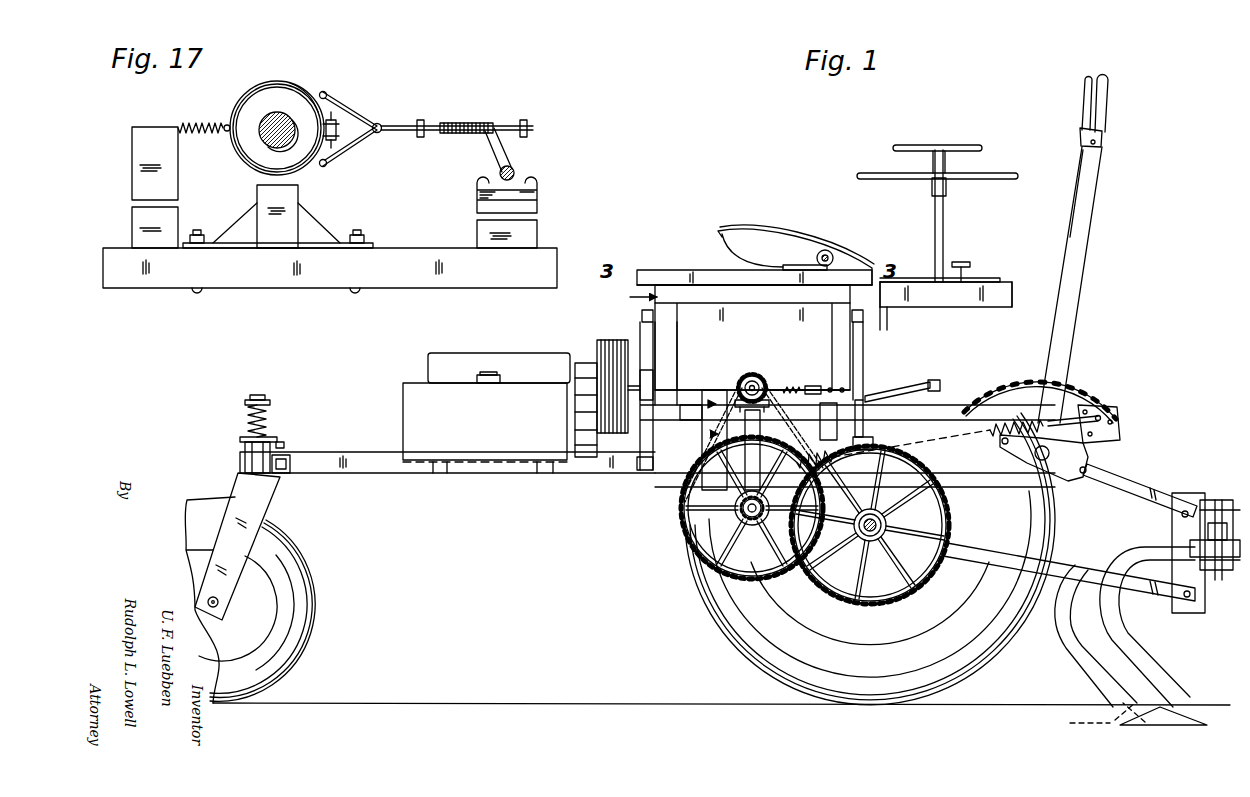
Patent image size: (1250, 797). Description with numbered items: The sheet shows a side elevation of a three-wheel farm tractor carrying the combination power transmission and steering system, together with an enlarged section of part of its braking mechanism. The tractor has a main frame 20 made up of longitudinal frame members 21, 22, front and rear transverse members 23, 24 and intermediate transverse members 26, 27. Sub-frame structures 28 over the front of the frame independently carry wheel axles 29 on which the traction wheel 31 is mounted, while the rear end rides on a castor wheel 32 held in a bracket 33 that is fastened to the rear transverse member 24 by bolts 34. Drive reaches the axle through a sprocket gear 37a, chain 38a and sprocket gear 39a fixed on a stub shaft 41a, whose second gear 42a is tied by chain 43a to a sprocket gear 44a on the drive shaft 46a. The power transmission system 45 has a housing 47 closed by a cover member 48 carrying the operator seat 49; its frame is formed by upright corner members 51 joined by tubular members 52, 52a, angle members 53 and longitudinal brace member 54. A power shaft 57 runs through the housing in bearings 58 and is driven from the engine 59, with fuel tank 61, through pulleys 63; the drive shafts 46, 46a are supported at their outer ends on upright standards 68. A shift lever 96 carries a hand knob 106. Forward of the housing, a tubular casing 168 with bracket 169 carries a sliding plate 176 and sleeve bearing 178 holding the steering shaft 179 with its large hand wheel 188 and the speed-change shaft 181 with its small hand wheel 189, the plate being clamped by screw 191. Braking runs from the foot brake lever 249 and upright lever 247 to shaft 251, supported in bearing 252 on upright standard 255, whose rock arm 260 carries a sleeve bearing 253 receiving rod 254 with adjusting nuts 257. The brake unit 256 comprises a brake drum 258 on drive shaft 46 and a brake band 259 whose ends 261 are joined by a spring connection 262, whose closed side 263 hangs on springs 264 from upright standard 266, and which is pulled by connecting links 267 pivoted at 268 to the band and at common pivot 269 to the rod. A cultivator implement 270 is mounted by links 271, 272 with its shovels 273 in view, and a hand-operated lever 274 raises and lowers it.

In FIG. 1, the main frame 20 is at (366, 448).
In FIG. 17, the longitudinal frame member 21 is at (253, 270).
In FIG. 1, the longitudinal frame member 22 is at (383, 470).
In FIG. 1, the front transverse member 23 is at (1050, 453).
In FIG. 1, the rear transverse member 24 is at (291, 467).
In FIG. 1, the intermediate transverse member 26 is at (687, 412).
In FIG. 1, the intermediate transverse member 27 is at (925, 440).
In FIG. 1, the sub-frame structure 28 is at (885, 545).
In FIG. 1, the wheel axle 29 is at (862, 535).
In FIG. 1, the traction wheel 31 is at (955, 655).
In FIG. 1, the castor wheel 32 is at (316, 617).
In FIG. 1, the bracket 33 is at (250, 458).
In FIG. 1, the bolt 34 is at (285, 447).
In FIG. 1, the sprocket gear 37a is at (818, 575).
In FIG. 1, the chain 38a is at (910, 590).
In FIG. 1, the sprocket gear 39a is at (736, 520).
In FIG. 1, the stub shaft 41a is at (746, 512).
In FIG. 1, the second gear 42a is at (698, 513).
In FIG. 1, the chain 43a is at (677, 470).
In FIG. 1, the sprocket gear 44a is at (756, 378).
In FIG. 1, the power transmission system 45 is at (679, 264).
In FIG. 17, the drive shaft 46 is at (277, 137).
In FIG. 1, the drive shaft 46a is at (773, 389).
In FIG. 1, the housing 47 is at (710, 307).
In FIG. 1, the cover member 48 is at (711, 270).
In FIG. 1, the seat 49 is at (788, 252).
In FIG. 1, the upright corner member 51 is at (870, 350).
In FIG. 1, the tubular member 52 is at (866, 323).
In FIG. 1, the tubular member 52a is at (640, 316).
In FIG. 1, the angle member 53 is at (755, 293).
In FIG. 1, the longitudinal brace member 54 is at (645, 467).
In FIG. 1, the power shaft 57 is at (646, 387).
In FIG. 1, the bearing 58 is at (929, 385).
In FIG. 1, the engine 59 is at (453, 367).
In FIG. 1, the fuel tank 61 is at (418, 395).
In FIG. 1, the pulley 63 is at (600, 342).
In FIG. 17, the upright standard 68 is at (291, 198).
In FIG. 1, the upright standard 68 is at (751, 430).
In FIG. 1, the shift lever 96 is at (804, 262).
In FIG. 1, the hand knob 106 is at (830, 256).
In FIG. 1, the tubular casing 168 is at (995, 293).
In FIG. 1, the bracket 169 is at (890, 313).
In FIG. 1, the sliding plate 176 is at (983, 281).
In FIG. 1, the sleeve bearing 178 is at (945, 213).
In FIG. 1, the steering shaft 179 is at (933, 198).
In FIG. 1, the speed-change shaft 181 is at (893, 150).
In FIG. 1, the hand wheel 188 is at (998, 174).
In FIG. 1, the hand wheel 189 is at (960, 146).
In FIG. 1, the clamping screw 191 is at (961, 262).
In FIG. 1, the upright lever 247 is at (868, 357).
In FIG. 1, the foot brake lever 249 is at (939, 382).
In FIG. 17, the shaft 251 is at (538, 176).
In FIG. 17, the bearing 252 is at (516, 169).
In FIG. 17, the sleeve bearing 253 is at (485, 123).
In FIG. 17, the rod 254 is at (400, 125).
In FIG. 17, the upright standard 255 is at (525, 205).
In FIG. 1, the upright standard 255 is at (870, 437).
In FIG. 17, the brake unit 256 is at (301, 76).
In FIG. 17, the adjusting nut 257 is at (522, 119).
In FIG. 17, the brake drum 258 is at (275, 95).
In FIG. 17, the brake band 259 is at (246, 98).
In FIG. 17, the rock arm 260 is at (496, 151).
In FIG. 17, the band end 261 is at (337, 136).
In FIG. 17, the spring connection 262 is at (338, 133).
In FIG. 17, the closed side 263 is at (225, 125).
In FIG. 17, the spring 264 is at (201, 125).
In FIG. 17, the upright standard 266 is at (147, 183).
In FIG. 1, the upright standard 266 is at (714, 400).
In FIG. 17, the connecting link 267 is at (340, 148).
In FIG. 17, the pivot 268 is at (323, 167).
In FIG. 17, the common pivot 269 is at (379, 124).
In FIG. 1, the cultivator implement 270 is at (1126, 637).
In FIG. 1, the link 271 is at (1128, 487).
In FIG. 1, the link 272 is at (1057, 567).
In FIG. 1, the shovel 273 is at (1178, 712).
In FIG. 1, the hand-operated lever 274 is at (1070, 285).